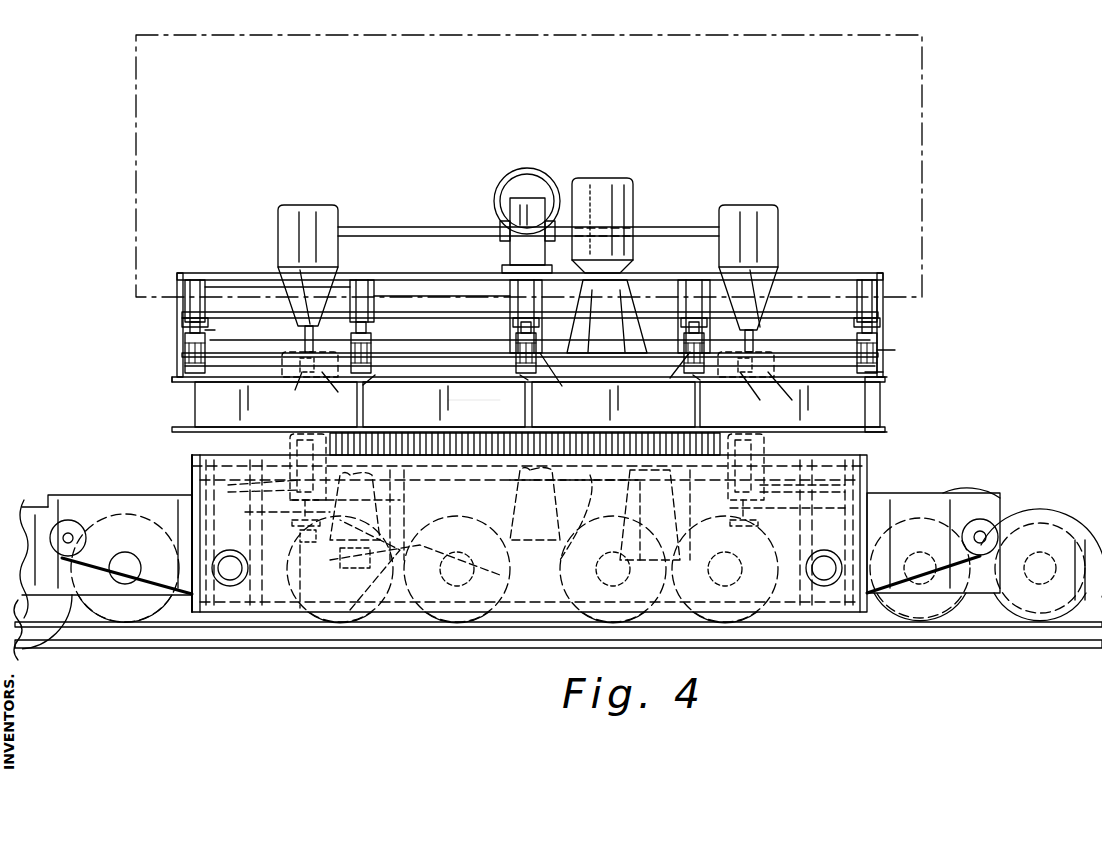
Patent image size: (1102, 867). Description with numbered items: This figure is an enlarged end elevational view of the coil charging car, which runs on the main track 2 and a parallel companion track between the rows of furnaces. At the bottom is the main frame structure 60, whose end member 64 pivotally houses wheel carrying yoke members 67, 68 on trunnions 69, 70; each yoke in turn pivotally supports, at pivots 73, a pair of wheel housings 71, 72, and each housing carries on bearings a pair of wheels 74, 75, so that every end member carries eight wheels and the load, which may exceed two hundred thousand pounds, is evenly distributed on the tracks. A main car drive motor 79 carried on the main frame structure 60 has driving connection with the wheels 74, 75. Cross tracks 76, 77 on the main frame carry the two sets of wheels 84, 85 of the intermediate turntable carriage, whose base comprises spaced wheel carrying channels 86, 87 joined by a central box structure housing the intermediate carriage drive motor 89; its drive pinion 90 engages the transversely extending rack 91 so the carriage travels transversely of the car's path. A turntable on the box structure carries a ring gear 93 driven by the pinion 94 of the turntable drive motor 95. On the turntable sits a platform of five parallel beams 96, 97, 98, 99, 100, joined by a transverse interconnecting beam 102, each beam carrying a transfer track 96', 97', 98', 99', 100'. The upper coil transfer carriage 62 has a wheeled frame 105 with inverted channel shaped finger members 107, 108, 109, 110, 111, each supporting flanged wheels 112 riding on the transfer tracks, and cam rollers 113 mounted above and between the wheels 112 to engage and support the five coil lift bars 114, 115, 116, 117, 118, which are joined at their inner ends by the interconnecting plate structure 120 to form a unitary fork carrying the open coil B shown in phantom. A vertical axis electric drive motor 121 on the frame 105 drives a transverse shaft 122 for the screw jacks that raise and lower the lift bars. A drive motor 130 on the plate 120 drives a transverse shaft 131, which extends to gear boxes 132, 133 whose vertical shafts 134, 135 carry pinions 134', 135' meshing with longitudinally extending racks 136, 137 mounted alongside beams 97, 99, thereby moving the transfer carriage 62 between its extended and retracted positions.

The open coil B is at (922, 160).
The upper coil transfer carriage 62 is at (828, 271).
The coil lift bar 118 is at (194, 300).
The interconnecting plate structure 120 is at (252, 282).
The coil lift bar 117 is at (362, 300).
The transverse shaft 122 is at (426, 307).
The coil lift bar 116 is at (518, 301).
The coil lift bar 115 is at (696, 300).
The coil lift bar 114 is at (866, 300).
The flanged wheels 112 is at (193, 352).
The cam rollers 113 is at (189, 322).
The finger member 111 is at (207, 352).
The gear box 133 is at (338, 220).
The vertical shaft 135 is at (300, 350).
The pinion 135' is at (281, 399).
The longitudinally extending rack 137 is at (330, 382).
The gear box 132 is at (778, 232).
The vertical shaft 134 is at (759, 350).
The pinion 134' is at (803, 397).
The longitudinally extending rack 136 is at (748, 390).
The transverse shaft 131 is at (403, 240).
The drive motor 130 is at (548, 176).
The vertical axis electric drive motor 121 is at (626, 204).
The wheeled frame 105 is at (437, 352).
The finger member 110 is at (540, 333).
The transfer car track supporting beam 100 is at (276, 404).
The transfer track 100' is at (153, 394).
The transfer car track supporting beam 99 is at (444, 404).
The transfer track 99' is at (385, 390).
The transverse interconnecting beam 102 is at (474, 410).
The transfer car track supporting beam 98 is at (613, 404).
The transfer track 98' is at (501, 388).
The finger member 109 is at (565, 378).
The finger member 108 is at (672, 374).
The transfer car track supporting beam 97 is at (782, 404).
The transfer track 97' is at (670, 401).
The transfer car track supporting beam 96 is at (888, 404).
The transfer track 96' is at (905, 370).
The finger member 107 is at (878, 354).
The main frame structure 60 is at (876, 462).
The wheel carrying channel 86 is at (290, 444).
The wheel carrying channel 87 is at (768, 441).
The wheels 84 is at (262, 478).
The cross track 76 is at (258, 511).
The intermediate carriage drive motor 89 is at (385, 482).
The ring gear 93 is at (560, 440).
The pinion 94 is at (562, 506).
The turntable drive motor 95 is at (695, 480).
The wheels 85 is at (803, 476).
The cross track 77 is at (800, 507).
The drive pinion 90 is at (404, 566).
The transversely extending rack 91 is at (300, 542).
The main track 2 is at (478, 645).
The wheel housing 71 is at (22, 495).
The wheel carrying yoke member 67 is at (148, 500).
The end member 64 is at (190, 470).
The wheel 75 is at (148, 614).
The wheel 74 is at (50, 614).
The pivotal support 73 is at (70, 533).
The pivot or trunnion 69 is at (230, 570).
The pivot or trunnion 70 is at (824, 572).
The wheel carrying yoke member 68 is at (980, 530).
The main car drive motor 79 is at (973, 480).
The wheel housing 72 is at (1048, 510).